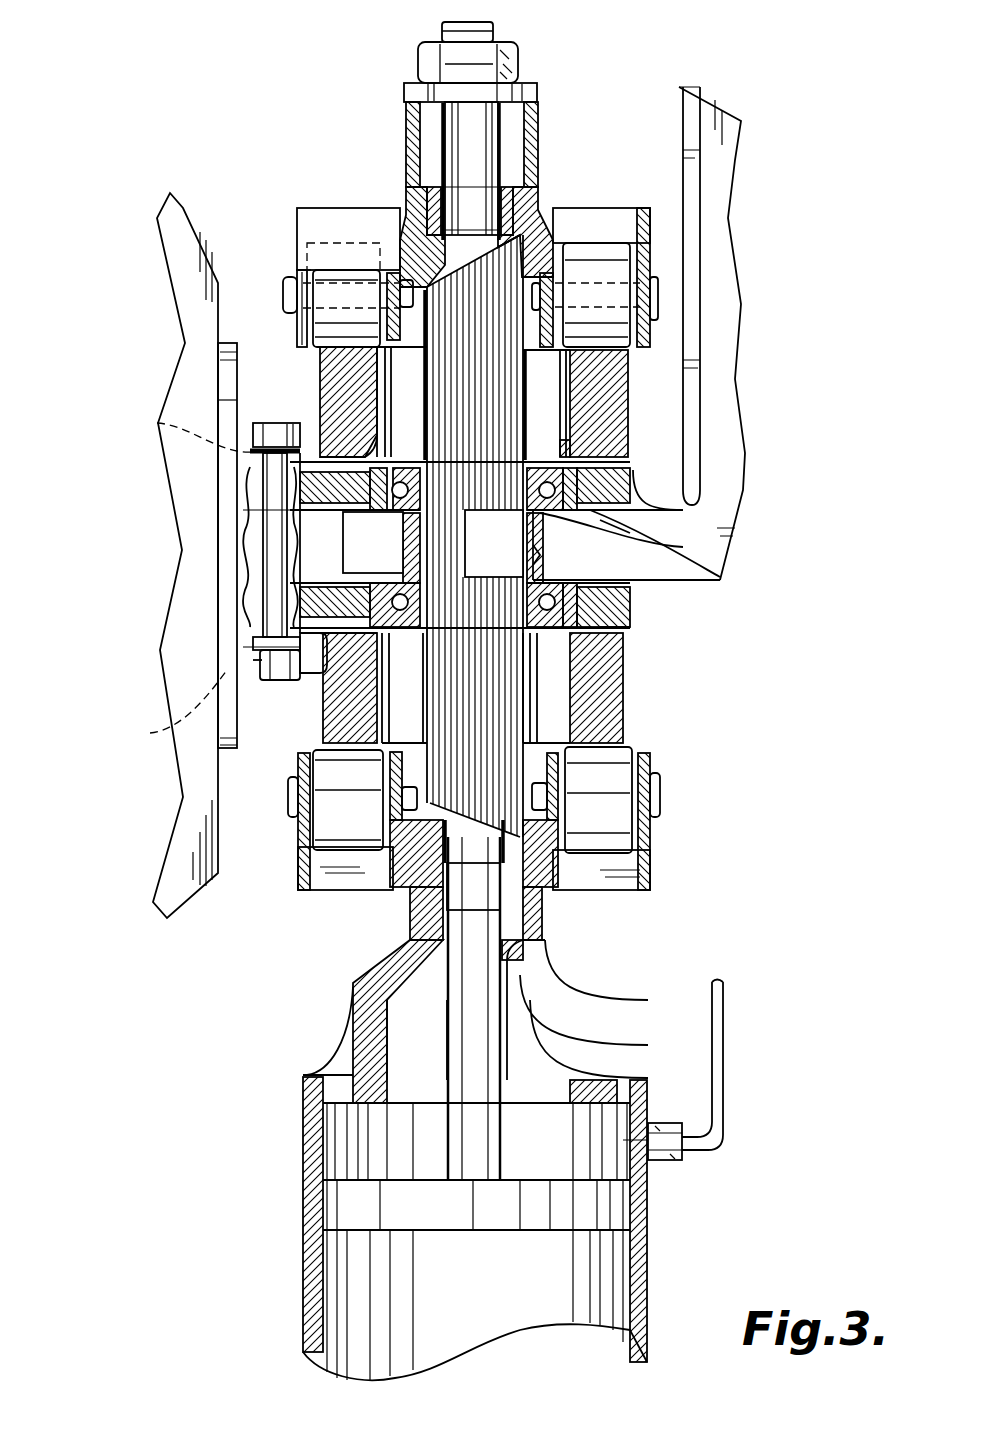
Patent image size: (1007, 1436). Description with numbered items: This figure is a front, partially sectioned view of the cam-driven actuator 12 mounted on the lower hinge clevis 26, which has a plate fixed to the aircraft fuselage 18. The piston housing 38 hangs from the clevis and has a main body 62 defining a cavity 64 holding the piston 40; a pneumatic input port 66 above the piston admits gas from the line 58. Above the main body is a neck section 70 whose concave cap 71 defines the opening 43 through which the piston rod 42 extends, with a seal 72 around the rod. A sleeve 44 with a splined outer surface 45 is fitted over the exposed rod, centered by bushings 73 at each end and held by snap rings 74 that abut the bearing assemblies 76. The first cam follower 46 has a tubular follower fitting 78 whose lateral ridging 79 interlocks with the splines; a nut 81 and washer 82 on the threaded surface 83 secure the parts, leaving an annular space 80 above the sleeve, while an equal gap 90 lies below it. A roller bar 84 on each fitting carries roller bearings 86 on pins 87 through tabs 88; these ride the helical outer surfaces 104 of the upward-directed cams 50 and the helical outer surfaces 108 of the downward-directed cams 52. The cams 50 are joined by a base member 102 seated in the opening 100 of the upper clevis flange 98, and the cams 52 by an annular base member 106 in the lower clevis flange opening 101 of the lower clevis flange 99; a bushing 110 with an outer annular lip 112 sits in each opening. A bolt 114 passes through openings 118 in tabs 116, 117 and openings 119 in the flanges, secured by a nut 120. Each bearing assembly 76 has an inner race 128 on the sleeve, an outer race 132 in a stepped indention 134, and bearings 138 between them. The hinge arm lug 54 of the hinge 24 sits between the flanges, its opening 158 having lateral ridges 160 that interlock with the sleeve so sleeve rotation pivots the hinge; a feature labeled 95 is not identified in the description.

The cam-driven actuator 12 is at (163, 1082).
The aircraft fuselage 18 is at (165, 215).
The hinge 24 is at (733, 145).
The lower hinge clevis 26 is at (218, 357).
The piston housing 38 is at (660, 1270).
The piston 40 is at (444, 1221).
The piston rod 42 is at (463, 125).
The opening 43 is at (468, 1025).
The sleeve 44 is at (545, 720).
The splined outer surface 45 is at (500, 263).
The first cam follower 46 is at (546, 194).
The upward-directed cams 50 is at (335, 372).
The downward-directed cams 52 is at (610, 690).
The hinge arm lug 54 is at (345, 557).
The line 58 is at (723, 1070).
The main body 62 is at (307, 1185).
The cavity 64 is at (335, 1140).
The pneumatic input port 66 is at (680, 1160).
The neck section 70 is at (363, 1030).
The cap 71 is at (387, 975).
The seal 72 is at (550, 963).
The bushings 73 is at (462, 200).
The snap rings 74 is at (493, 462).
The bearing assemblies 76 is at (385, 462).
The follower fitting 78 is at (530, 170).
The lateral ridging 79 is at (433, 220).
The annular space 80 is at (513, 133).
The nut 81 is at (518, 62).
The washer 82 is at (537, 92).
The threaded surface 83 is at (493, 31).
The roller bar 84 is at (293, 240).
The roller bearings 86 is at (348, 250).
The pin 87 is at (290, 290).
The tabs 88 is at (293, 330).
The gap 90 is at (425, 917).
The plate edge 95 is at (223, 407).
The upper clevis flange 98 is at (683, 497).
The lower clevis flange 99 is at (630, 605).
The opening 100 is at (683, 532).
The lower clevis flange opening 101 is at (632, 614).
The base member 102 is at (375, 443).
The outer surface 104 is at (583, 443).
The annular base member 106 is at (327, 667).
The helical outer surface 108 is at (325, 727).
The bushing 110 is at (715, 570).
The outer annular lip 112 is at (590, 470).
The bolt 114 is at (270, 558).
The tab 116 is at (253, 460).
The tab 117 is at (257, 667).
The openings 118 is at (157, 425).
The openings 119 is at (253, 510).
The nut 120 is at (253, 667).
The inner race 128 is at (564, 559).
The outer race 132 is at (600, 522).
The stepped indention 134 is at (143, 607).
The bearings 138 is at (560, 512).
The opening 158 is at (403, 557).
The lateral ridges 160 is at (447, 530).